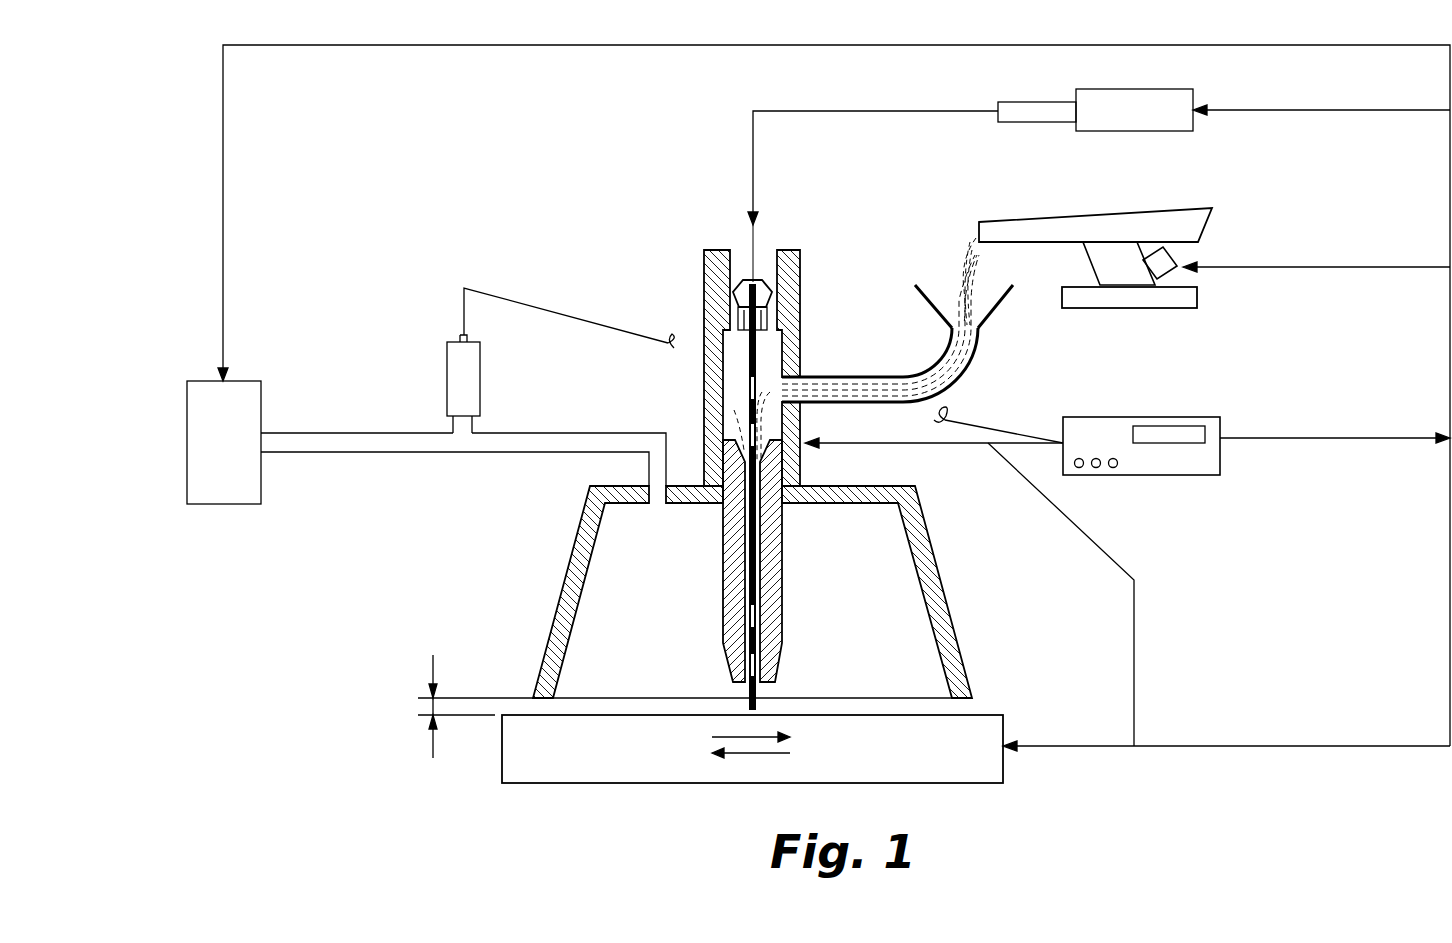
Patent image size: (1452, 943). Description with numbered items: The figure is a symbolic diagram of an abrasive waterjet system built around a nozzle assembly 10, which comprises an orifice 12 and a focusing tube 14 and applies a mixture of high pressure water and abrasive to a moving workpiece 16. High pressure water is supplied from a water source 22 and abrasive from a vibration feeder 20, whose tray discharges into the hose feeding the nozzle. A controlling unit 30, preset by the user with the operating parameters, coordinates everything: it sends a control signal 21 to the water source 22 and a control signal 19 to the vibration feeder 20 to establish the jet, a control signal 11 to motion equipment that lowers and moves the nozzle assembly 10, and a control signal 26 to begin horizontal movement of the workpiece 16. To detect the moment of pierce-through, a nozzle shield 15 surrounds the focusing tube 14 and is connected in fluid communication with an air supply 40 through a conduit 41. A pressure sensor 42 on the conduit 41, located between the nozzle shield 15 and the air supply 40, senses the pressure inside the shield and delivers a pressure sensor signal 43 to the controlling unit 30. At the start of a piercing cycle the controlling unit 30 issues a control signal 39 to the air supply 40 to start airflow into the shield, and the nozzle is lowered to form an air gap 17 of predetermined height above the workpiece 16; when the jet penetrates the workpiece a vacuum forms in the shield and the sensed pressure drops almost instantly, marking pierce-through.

The nozzle assembly 10 is at (680, 389).
The control signal 11 is at (1085, 537).
The orifice 12 is at (740, 250).
The focusing tube 14 is at (783, 570).
The nozzle shield 15 is at (580, 585).
The workpiece 16 is at (600, 790).
The air gap 17 is at (402, 708).
The control signal 19 is at (1355, 267).
The vibration feeder 20 is at (1205, 222).
The control signal 21 is at (1312, 110).
The water source 22 is at (1118, 131).
The control signal 26 is at (1062, 745).
The controlling unit 30 is at (1222, 460).
The control signal 39 is at (416, 48).
The air supply 40 is at (187, 468).
The conduit 41 is at (371, 455).
The pressure sensor 42 is at (447, 375).
The pressure sensor signal 43 is at (557, 312).